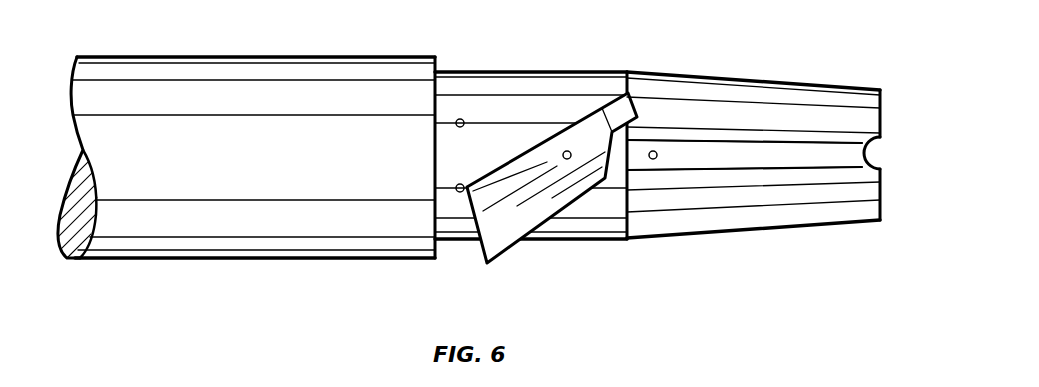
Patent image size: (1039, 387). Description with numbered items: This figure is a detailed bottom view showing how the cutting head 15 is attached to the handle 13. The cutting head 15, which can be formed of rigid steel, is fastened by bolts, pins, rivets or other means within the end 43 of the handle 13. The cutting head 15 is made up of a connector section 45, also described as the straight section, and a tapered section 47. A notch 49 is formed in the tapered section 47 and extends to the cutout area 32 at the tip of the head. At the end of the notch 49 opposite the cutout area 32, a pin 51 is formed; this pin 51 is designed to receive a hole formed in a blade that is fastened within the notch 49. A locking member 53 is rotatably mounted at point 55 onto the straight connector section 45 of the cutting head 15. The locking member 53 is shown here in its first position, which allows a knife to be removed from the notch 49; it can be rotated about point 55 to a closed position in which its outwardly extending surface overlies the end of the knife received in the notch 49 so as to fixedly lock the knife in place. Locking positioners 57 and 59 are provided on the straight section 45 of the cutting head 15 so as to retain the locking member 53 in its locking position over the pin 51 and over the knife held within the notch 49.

The handle 13 is at (317, 55).
The end of the handle 43 is at (438, 58).
The cutting head 15 is at (557, 68).
The connector section 45 is at (598, 238).
The locking positioner 57 is at (464, 120).
The locking positioner 59 is at (464, 185).
The locking member 53 is at (503, 250).
The point 55 is at (563, 151).
The tapered section 47 is at (763, 78).
The notch 49 is at (838, 150).
The cutout area 32 is at (872, 153).
The pin 51 is at (657, 152).